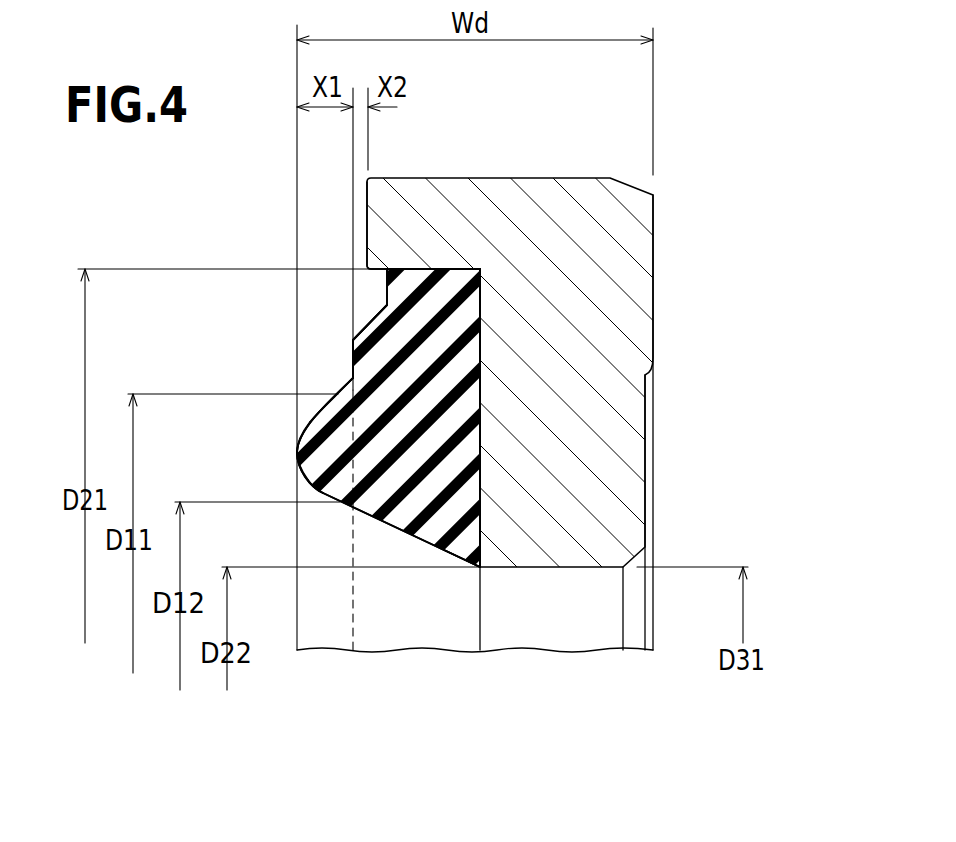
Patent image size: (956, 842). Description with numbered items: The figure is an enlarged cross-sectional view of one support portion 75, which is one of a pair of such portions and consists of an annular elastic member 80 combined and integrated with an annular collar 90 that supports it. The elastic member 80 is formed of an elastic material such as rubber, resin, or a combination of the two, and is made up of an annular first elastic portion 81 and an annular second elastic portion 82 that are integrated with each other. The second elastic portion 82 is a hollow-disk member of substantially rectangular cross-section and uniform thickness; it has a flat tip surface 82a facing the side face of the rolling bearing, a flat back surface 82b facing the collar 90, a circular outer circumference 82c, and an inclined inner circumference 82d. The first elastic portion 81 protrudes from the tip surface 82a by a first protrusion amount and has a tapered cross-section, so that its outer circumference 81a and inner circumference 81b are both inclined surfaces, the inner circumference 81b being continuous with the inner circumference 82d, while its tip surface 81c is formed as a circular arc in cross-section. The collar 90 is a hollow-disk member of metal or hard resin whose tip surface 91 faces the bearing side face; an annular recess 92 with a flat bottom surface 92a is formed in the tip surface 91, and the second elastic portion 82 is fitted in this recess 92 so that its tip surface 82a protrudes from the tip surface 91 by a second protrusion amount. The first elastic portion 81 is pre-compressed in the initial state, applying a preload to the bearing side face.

The support portion 75 is at (731, 116).
The elastic member 80 is at (452, 713).
The first elastic portion 81 is at (333, 487).
The outer circumference of first elastic portion 81a is at (335, 410).
The inner circumference of first elastic portion 81b is at (325, 490).
The tip surface of first elastic portion 81c is at (296, 452).
The second elastic portion 82 is at (427, 523).
The tip surface of second elastic portion 82a is at (352, 370).
The back surface of second elastic portion 82b is at (483, 390).
The outer circumference of second elastic portion 82c is at (417, 267).
The inner circumference of second elastic portion 82d is at (450, 557).
The collar 90 is at (657, 277).
The tip surface of collar 91 is at (367, 231).
The recess 92 is at (440, 267).
The bottom surface of recess 92a is at (480, 341).